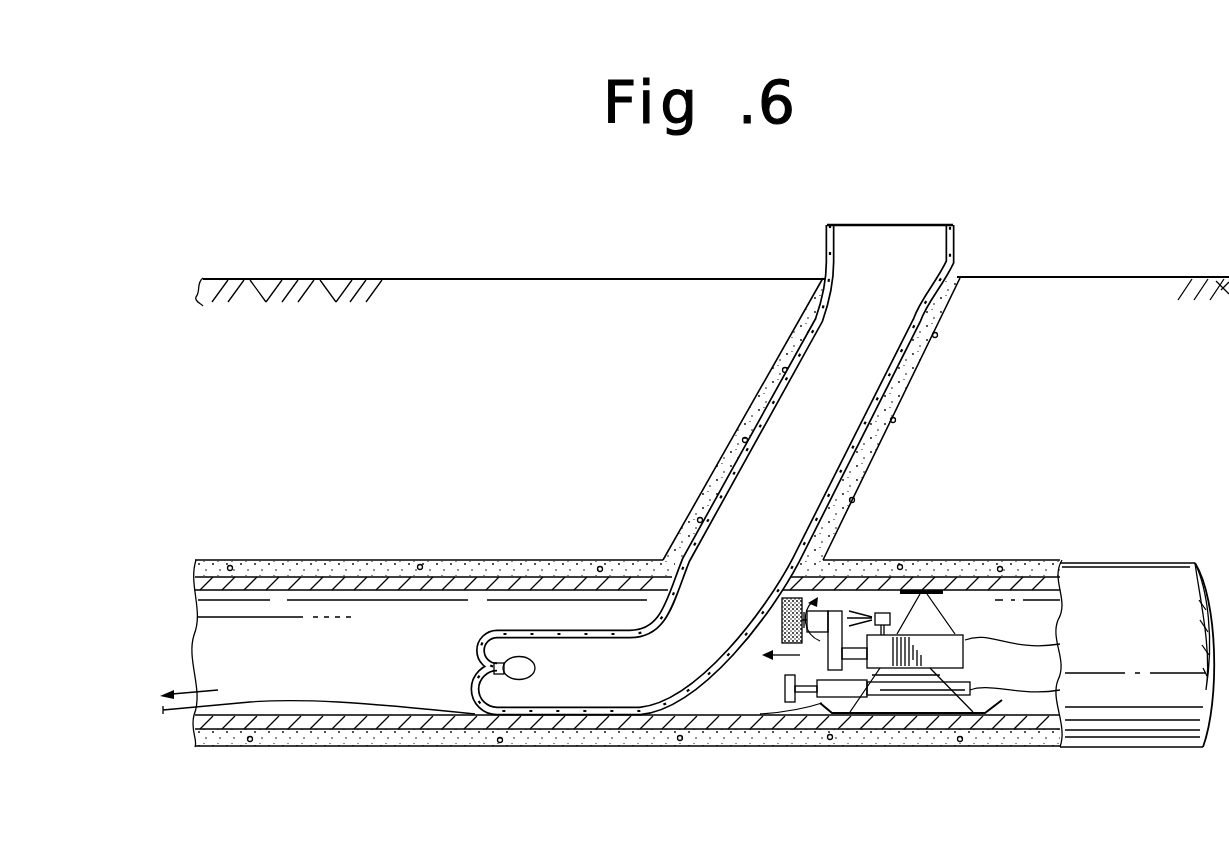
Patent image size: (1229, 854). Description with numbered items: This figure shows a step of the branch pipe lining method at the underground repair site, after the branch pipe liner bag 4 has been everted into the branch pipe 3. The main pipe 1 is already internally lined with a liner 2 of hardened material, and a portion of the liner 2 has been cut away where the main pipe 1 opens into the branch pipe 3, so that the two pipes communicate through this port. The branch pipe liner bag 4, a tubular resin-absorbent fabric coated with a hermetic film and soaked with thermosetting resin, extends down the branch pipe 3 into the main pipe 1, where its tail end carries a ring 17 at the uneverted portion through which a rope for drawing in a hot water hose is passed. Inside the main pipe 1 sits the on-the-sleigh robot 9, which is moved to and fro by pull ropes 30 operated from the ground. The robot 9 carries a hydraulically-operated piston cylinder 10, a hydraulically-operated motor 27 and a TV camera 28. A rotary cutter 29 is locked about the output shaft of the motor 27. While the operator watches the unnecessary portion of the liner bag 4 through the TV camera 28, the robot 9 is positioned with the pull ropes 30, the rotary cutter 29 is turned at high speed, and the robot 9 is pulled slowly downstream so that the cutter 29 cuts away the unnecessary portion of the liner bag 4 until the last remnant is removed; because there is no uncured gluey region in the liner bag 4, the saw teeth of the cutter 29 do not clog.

The main pipe 1 is at (1106, 567).
The liner 2 is at (380, 591).
The branch pipe 3 is at (894, 410).
The branch pipe liner bag 4 is at (732, 664).
The on-the-sleigh robot 9 is at (960, 634).
The hydraulically-operated piston cylinder 10 is at (898, 690).
The ring 17 is at (536, 670).
The hydraulically-operated motor 27 is at (825, 607).
The TV camera 28 is at (884, 612).
The rotary cutter 29 is at (781, 603).
The pull ropes 30 is at (290, 701).